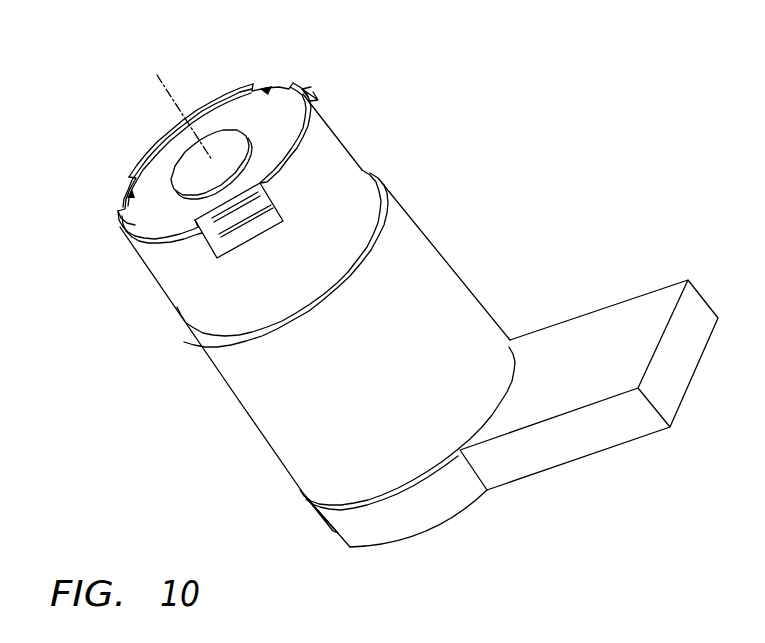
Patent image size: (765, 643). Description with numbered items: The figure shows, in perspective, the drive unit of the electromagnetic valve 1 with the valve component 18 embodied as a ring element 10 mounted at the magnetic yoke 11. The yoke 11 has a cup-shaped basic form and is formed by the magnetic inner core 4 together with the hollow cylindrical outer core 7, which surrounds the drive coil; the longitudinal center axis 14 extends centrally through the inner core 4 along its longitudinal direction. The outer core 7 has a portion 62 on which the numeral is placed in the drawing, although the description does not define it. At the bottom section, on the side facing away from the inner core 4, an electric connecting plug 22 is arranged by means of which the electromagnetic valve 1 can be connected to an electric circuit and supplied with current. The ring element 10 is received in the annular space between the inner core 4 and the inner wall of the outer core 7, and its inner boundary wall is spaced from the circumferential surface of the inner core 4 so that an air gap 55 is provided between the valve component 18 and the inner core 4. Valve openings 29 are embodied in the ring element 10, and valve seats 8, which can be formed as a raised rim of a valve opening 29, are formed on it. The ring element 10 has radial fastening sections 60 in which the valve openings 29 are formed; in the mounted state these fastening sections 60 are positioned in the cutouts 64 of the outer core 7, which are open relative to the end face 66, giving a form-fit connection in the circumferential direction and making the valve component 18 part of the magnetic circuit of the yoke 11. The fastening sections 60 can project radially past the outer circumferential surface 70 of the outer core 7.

The electromagnetic valve 1 is at (497, 247).
The magnetic inner core 4 is at (221, 143).
The outer core 7 is at (355, 160).
The valve seats 8 is at (259, 80).
The ring element 10 is at (173, 150).
The magnetic yoke 11 is at (268, 450).
The longitudinal center axis 14 is at (174, 103).
The valve component 18 is at (152, 217).
The electric connecting plug 22 is at (603, 368).
The valve openings 29 is at (120, 183).
The air gap 55 is at (200, 187).
The fastening section 60 is at (207, 238).
The cap section 62 is at (318, 140).
The cutouts 64 is at (213, 257).
The end face 66 is at (127, 223).
The outer circumferential surface 70 is at (210, 313).